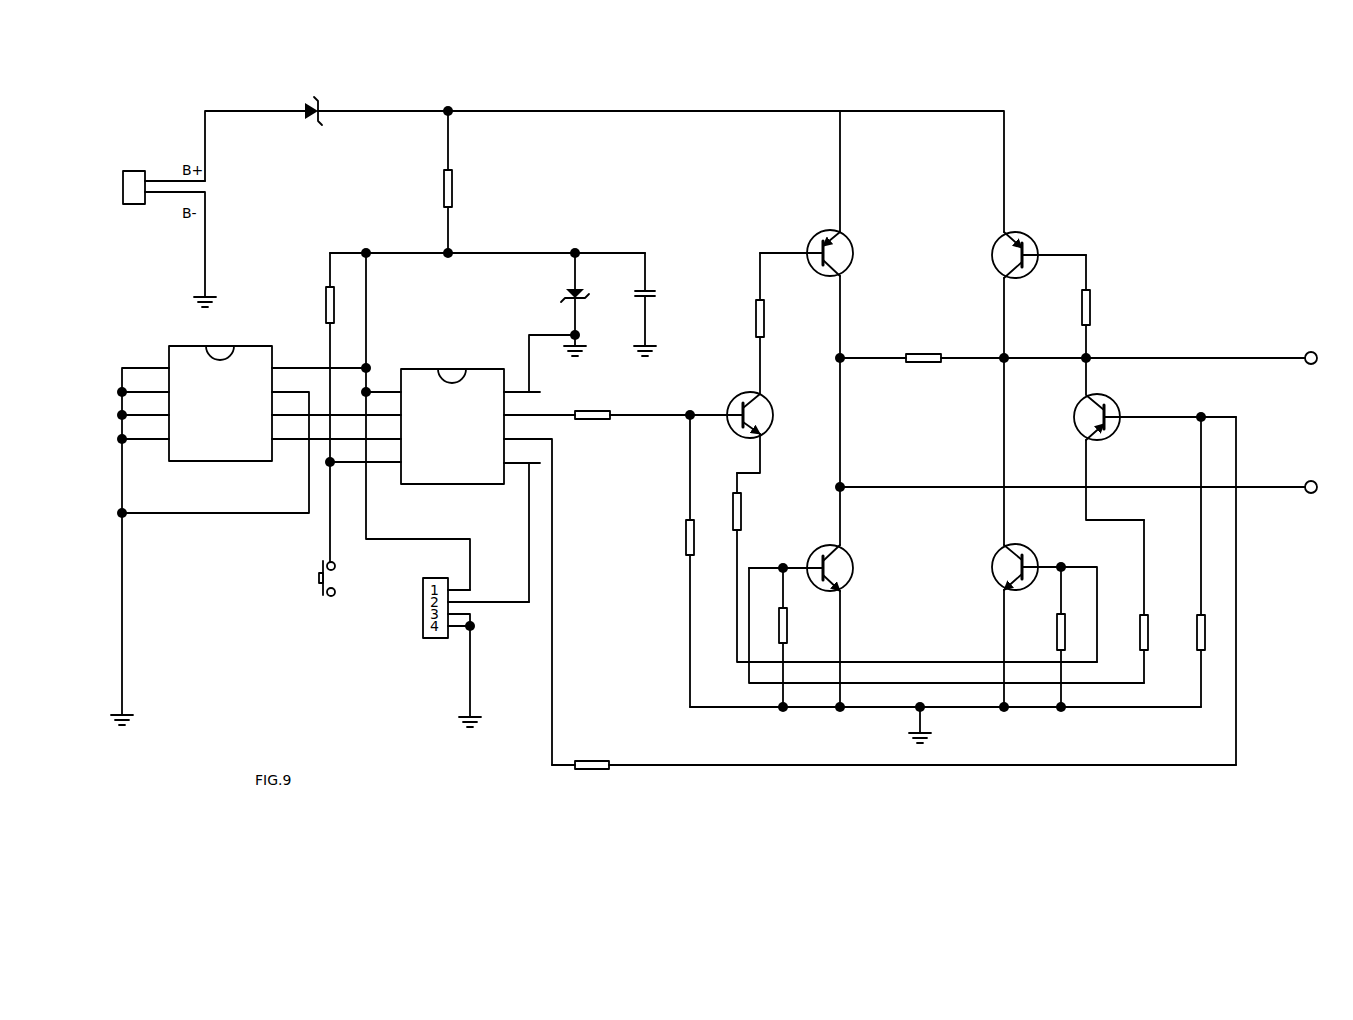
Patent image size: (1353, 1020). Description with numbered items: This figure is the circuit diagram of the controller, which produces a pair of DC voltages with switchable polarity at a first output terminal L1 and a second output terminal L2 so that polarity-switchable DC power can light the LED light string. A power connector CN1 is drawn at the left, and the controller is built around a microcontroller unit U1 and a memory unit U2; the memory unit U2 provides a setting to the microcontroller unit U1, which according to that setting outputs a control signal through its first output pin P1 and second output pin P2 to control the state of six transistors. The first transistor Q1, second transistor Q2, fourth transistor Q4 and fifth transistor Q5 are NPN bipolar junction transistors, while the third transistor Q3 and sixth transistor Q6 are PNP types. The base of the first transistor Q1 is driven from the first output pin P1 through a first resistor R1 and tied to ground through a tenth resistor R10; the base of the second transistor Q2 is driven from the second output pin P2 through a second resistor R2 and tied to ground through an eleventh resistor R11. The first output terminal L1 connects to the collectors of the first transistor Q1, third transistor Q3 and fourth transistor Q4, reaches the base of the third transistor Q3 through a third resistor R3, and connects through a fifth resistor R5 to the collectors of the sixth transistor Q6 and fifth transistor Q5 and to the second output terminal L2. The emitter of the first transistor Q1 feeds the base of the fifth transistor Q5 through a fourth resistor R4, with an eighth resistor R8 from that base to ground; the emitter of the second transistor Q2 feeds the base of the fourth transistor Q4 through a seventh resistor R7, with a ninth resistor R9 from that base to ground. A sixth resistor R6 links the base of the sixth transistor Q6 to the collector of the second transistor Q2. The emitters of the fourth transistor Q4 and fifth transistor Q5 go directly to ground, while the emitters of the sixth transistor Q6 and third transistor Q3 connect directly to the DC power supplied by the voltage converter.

The power connector CN1 is at (167, 221).
The memory unit U2 is at (221, 394).
The microcontroller unit U1 is at (463, 417).
The first output pin P1 is at (531, 593).
The second output pin P2 is at (542, 406).
The first resistor R1 is at (894, 756).
The second resistor R2 is at (659, 427).
The third resistor R3 is at (1099, 306).
The fourth resistor R4 is at (1132, 601).
The fifth resistor R5 is at (963, 370).
The sixth resistor R6 is at (749, 295).
The seventh resistor R7 is at (904, 567).
The eighth resistor R8 is at (797, 637).
The ninth resistor R9 is at (1050, 637).
The tenth resistor R10 is at (1182, 562).
The eleventh resistor R11 is at (675, 561).
The first transistor Q1 is at (1155, 439).
The second transistor Q2 is at (737, 405).
The third transistor Q3 is at (1039, 251).
The fourth transistor Q4 is at (1044, 622).
The fifth transistor Q5 is at (801, 623).
The sixth transistor Q6 is at (806, 251).
The first output terminal L1 is at (1201, 350).
The second output terminal L2 is at (1078, 479).